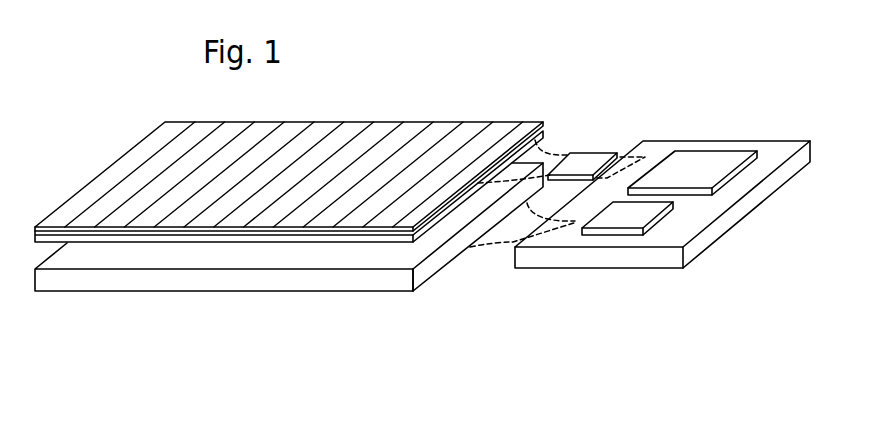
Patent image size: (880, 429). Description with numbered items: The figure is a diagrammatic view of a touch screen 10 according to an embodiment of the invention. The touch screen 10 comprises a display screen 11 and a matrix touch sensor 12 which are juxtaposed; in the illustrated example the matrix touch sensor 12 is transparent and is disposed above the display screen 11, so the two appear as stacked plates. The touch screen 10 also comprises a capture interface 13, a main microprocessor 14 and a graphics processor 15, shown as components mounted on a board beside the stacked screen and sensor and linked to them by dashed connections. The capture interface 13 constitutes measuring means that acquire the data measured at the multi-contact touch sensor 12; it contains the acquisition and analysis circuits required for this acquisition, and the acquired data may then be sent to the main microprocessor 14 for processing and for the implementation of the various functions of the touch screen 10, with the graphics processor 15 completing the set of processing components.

The touch screen 10 is at (283, 353).
The display screen 11 is at (353, 278).
The matrix touch sensor 12 is at (523, 124).
The capture interface 13 is at (588, 165).
The main microprocessor 14 is at (707, 163).
The graphics processor 15 is at (615, 235).